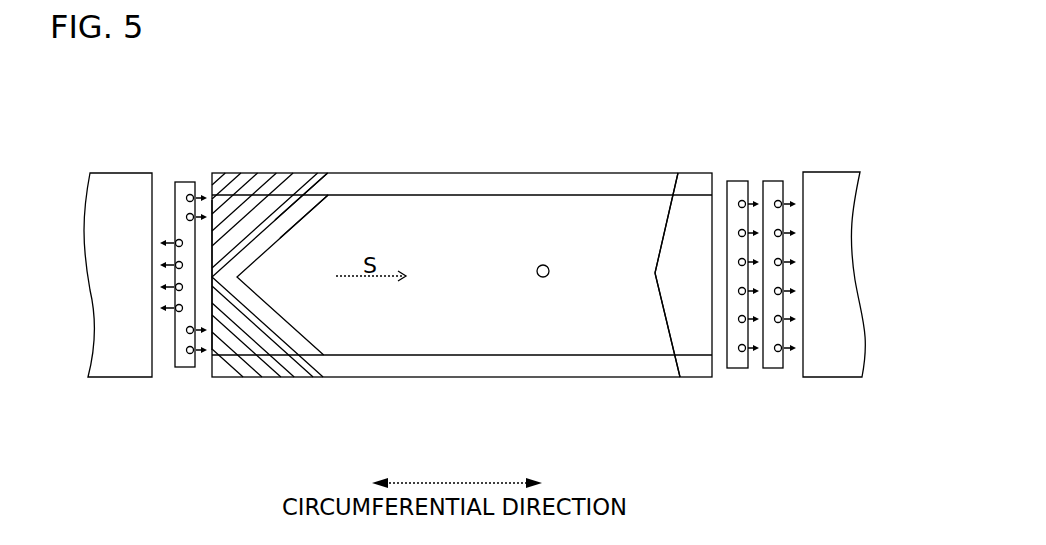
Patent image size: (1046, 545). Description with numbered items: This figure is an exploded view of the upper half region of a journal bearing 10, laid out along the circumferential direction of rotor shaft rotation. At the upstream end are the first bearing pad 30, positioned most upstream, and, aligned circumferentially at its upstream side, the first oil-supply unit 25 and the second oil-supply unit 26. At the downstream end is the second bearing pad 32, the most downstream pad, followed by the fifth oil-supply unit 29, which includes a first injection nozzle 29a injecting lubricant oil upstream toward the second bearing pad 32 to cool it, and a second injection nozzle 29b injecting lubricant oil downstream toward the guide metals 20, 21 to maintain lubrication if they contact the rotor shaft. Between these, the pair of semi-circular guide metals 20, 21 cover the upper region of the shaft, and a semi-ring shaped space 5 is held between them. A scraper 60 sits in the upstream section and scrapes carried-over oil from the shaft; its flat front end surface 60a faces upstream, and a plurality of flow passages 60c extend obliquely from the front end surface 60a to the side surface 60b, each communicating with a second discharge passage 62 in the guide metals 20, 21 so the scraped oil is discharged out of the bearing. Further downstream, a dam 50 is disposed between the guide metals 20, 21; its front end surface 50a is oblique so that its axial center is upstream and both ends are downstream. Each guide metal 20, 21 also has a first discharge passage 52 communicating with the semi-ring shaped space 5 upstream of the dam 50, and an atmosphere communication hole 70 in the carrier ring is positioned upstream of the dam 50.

The journal bearing 10 is at (608, 102).
The semi-ring shaped space 5 is at (435, 220).
The guide metal 20 is at (488, 182).
The guide metal 21 is at (472, 372).
The atmosphere communication hole 70 is at (545, 265).
The scraper 60 is at (309, 327).
The front end surface of the scraper 60a is at (210, 210).
The side surface of the scraper 60b is at (320, 196).
The flow passages 60c is at (290, 210).
The second discharge passage 62 is at (237, 172).
The dam 50 is at (667, 300).
The front end surface of the dam 50a is at (662, 243).
The first discharge passage 52 is at (672, 193).
The fifth oil-supply unit 29 is at (183, 178).
The first injection nozzle 29a is at (176, 314).
The second injection nozzle 29b is at (196, 355).
The second bearing pad 32 is at (115, 378).
The first oil-supply unit 25 is at (736, 178).
The second oil-supply unit 26 is at (774, 178).
The first bearing pad 30 is at (822, 378).